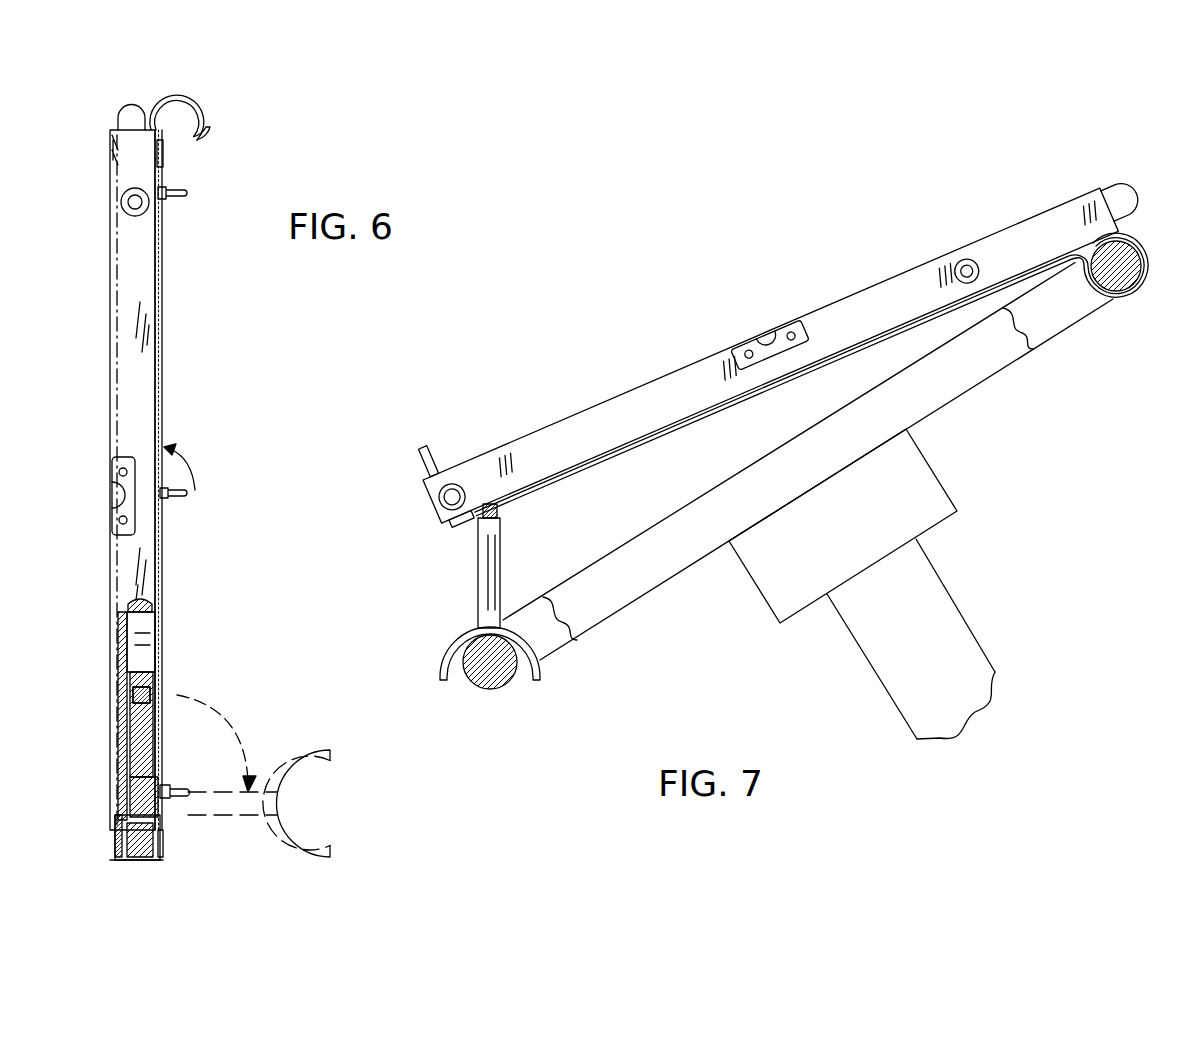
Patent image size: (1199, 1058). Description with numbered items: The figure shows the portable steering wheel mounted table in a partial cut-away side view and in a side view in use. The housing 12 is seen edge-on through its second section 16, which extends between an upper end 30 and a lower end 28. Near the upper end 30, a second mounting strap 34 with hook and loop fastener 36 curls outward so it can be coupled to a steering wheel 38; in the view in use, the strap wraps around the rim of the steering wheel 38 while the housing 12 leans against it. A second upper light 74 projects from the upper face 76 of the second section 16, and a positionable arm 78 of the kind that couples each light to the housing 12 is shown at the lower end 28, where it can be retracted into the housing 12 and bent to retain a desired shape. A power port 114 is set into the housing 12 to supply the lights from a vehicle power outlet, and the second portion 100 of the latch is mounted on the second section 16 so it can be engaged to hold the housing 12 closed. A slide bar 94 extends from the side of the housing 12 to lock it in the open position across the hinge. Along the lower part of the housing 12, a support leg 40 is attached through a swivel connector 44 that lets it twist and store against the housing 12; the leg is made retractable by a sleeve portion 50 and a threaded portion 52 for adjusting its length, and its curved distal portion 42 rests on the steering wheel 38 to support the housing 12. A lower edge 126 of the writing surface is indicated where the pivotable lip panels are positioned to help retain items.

In FIG. 6, the housing 12 is at (152, 225).
In FIG. 6, the second section 16 is at (147, 370).
In FIG. 6, the lower end 28 is at (117, 860).
In FIG. 6, the upper end 30 is at (110, 130).
In FIG. 6, the second mounting strap 34 is at (193, 100).
In FIG. 7, the second mounting strap 34 is at (1142, 245).
In FIG. 6, the hook and loop fastener 36 is at (208, 137).
In FIG. 7, the hook and loop fastener 36 is at (1025, 278).
In FIG. 7, the steering wheel 38 is at (487, 676).
In FIG. 7, the support leg 40 is at (480, 582).
In FIG. 6, the curved distal portion 42 is at (150, 638).
In FIG. 7, the curved distal portion 42 is at (455, 642).
In FIG. 6, the swivel connector 44 is at (143, 803).
In FIG. 6, the sleeve portion 50 is at (153, 684).
In FIG. 7, the sleeve portion 50 is at (497, 560).
In FIG. 6, the threaded portion 52 is at (158, 778).
In FIG. 6, the second upper light 74 is at (118, 110).
In FIG. 6, the upper face 76 is at (148, 128).
In FIG. 6, the positionable arm 78 is at (148, 862).
In FIG. 6, the slide bar 94 is at (168, 500).
In FIG. 6, the second portion of the latch 100 is at (112, 478).
In FIG. 6, the power port 114 is at (121, 200).
In FIG. 7, the lower edge of the writing surface 126 is at (443, 450).